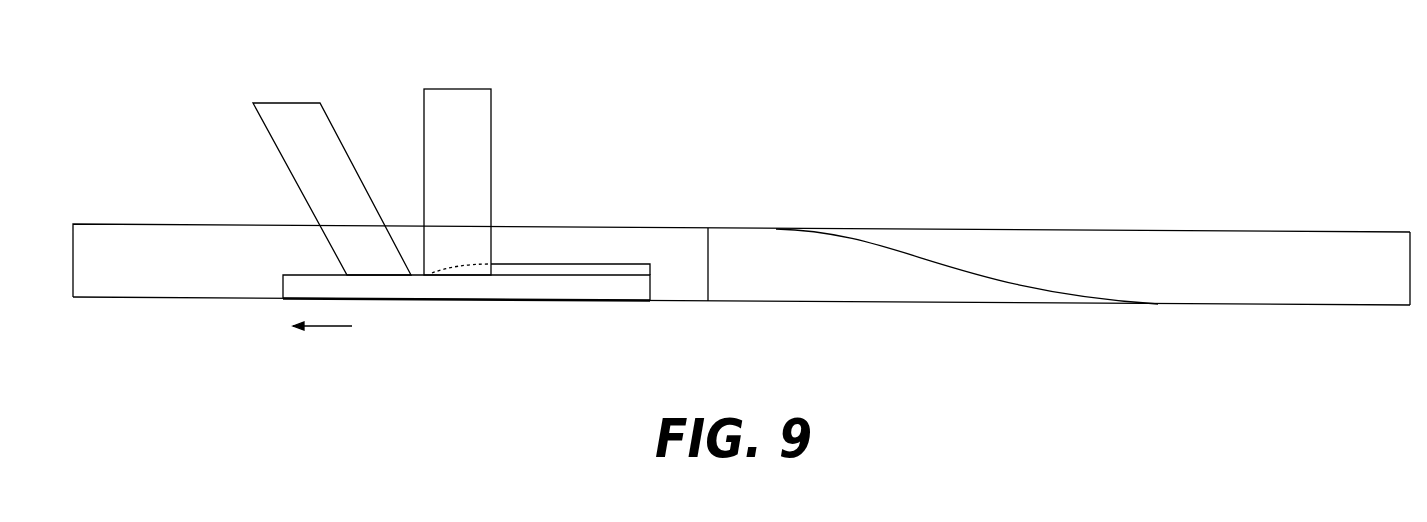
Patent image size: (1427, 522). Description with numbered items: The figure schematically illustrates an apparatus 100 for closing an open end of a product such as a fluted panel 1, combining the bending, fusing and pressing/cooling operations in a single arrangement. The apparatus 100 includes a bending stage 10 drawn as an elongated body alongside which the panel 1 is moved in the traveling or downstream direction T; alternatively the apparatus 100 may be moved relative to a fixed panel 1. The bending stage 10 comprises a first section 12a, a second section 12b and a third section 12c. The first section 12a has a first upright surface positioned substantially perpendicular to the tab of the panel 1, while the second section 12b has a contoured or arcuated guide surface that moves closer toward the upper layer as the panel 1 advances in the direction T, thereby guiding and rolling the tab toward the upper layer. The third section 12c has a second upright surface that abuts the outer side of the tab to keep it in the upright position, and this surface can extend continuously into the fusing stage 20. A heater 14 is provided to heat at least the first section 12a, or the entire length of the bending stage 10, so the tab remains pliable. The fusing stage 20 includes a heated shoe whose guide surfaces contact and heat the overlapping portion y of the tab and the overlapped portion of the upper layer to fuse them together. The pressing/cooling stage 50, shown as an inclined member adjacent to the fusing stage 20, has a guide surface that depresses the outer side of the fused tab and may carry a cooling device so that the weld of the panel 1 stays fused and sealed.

The apparatus 100 is at (809, 84).
The bending stage 10 is at (741, 225).
The first section 12a is at (1390, 258).
The second section 12b is at (922, 253).
The third section 12c is at (535, 255).
The heater 14 is at (1282, 297).
The fusing stage 20 is at (457, 120).
The pressing/cooling stage 50 is at (312, 135).
The fluted panel 1 is at (493, 300).
The overlapping portion y is at (612, 269).
The traveling or downstream direction T is at (322, 344).